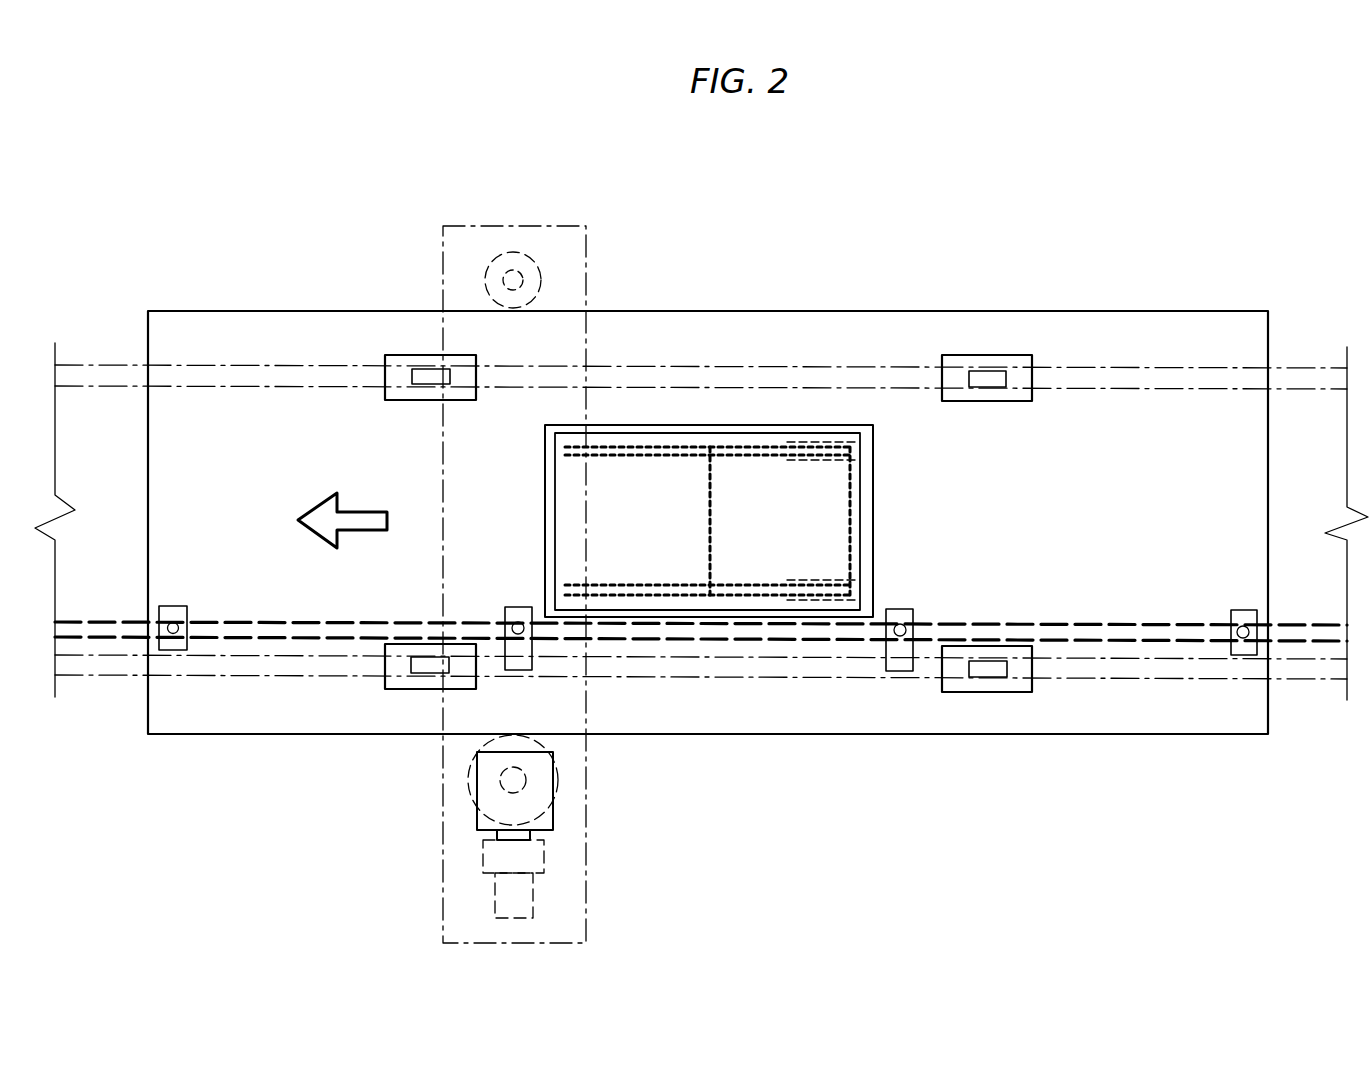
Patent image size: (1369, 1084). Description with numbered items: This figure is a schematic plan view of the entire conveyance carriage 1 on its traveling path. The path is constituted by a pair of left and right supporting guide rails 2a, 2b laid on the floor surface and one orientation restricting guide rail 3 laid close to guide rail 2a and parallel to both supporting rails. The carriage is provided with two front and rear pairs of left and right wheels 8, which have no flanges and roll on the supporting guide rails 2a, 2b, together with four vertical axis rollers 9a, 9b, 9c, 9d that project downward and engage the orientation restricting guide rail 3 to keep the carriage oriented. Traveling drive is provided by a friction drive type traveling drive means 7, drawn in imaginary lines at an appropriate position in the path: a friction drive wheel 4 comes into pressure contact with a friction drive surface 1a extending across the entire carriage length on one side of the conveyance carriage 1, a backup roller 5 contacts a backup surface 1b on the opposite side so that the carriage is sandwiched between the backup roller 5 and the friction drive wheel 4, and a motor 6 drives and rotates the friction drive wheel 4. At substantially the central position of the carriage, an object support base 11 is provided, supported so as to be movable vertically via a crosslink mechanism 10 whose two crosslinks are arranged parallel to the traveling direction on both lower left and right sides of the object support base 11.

The conveyance carriage 1 is at (1150, 312).
The friction drive surface 1a is at (852, 736).
The backup surface 1b is at (277, 310).
The supporting guide rail 2a is at (745, 672).
The supporting guide rail 2b is at (855, 378).
The orientation restricting guide rail 3 is at (263, 628).
The friction drive wheel 4 is at (553, 778).
The backup roller 5 is at (513, 255).
The motor 6 is at (520, 888).
The friction drive type traveling drive means 7 is at (440, 838).
The wheels 8 is at (430, 372).
The vertical axis roller 9a is at (173, 622).
The vertical axis roller 9b is at (518, 624).
The vertical axis roller 9c is at (900, 624).
The vertical axis roller 9d is at (1238, 632).
The crosslink mechanism 10 is at (745, 440).
The object support base 11 is at (800, 528).